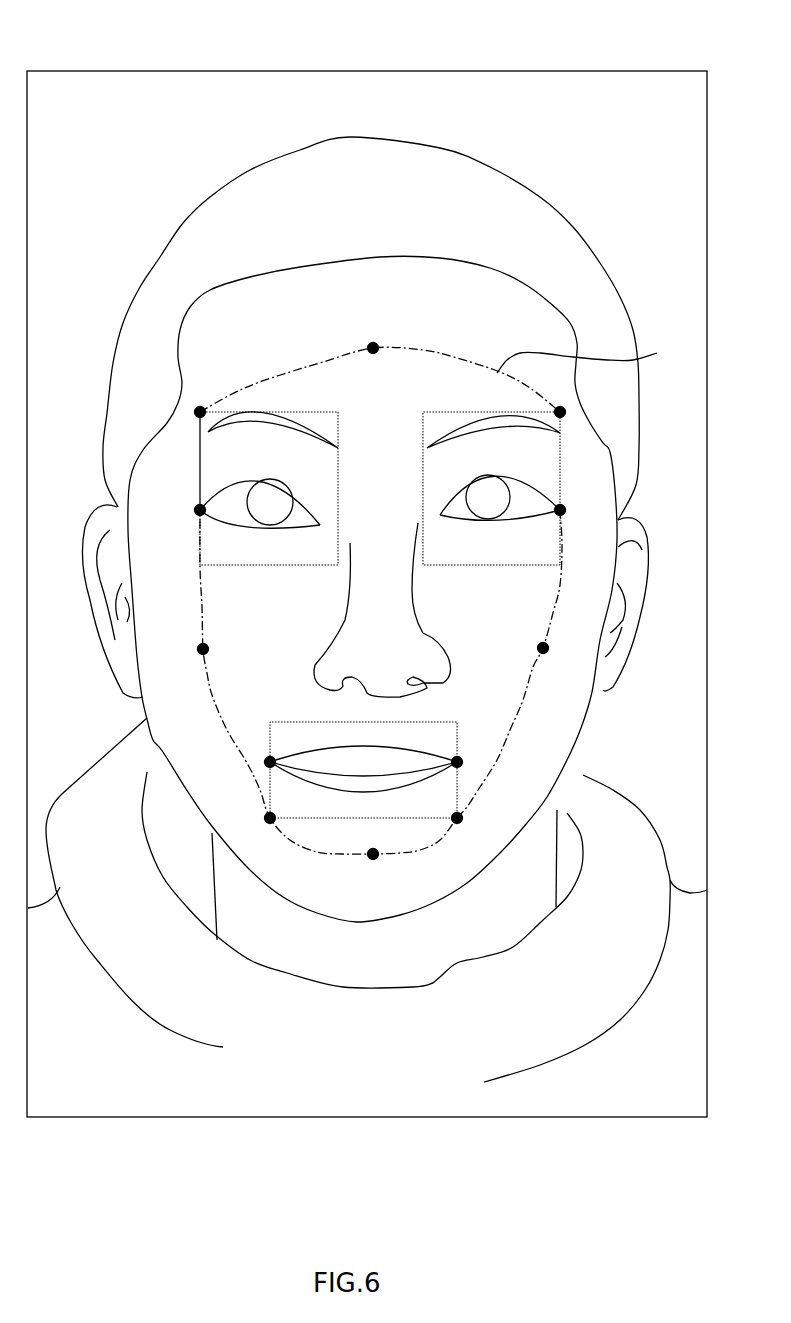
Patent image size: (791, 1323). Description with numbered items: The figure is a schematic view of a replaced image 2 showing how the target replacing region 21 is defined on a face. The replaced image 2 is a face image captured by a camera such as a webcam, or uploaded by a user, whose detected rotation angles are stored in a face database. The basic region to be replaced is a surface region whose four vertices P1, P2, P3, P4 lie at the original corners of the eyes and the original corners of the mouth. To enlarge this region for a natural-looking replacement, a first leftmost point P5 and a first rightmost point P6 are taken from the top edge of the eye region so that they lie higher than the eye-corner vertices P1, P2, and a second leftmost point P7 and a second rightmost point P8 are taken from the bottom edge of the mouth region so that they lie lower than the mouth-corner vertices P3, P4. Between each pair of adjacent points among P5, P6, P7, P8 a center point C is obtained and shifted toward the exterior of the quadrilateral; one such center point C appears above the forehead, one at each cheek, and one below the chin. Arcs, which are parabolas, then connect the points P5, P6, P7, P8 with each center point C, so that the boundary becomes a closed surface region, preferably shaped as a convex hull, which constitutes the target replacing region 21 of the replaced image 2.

The replaced image 2 is at (539, 71).
The target replacing region 21 is at (657, 353).
The vertex P1 is at (180, 511).
The vertex P2 is at (578, 518).
The vertex P3 is at (257, 748).
The vertex P4 is at (470, 748).
The first leftmost point P5 is at (201, 398).
The first rightmost point P6 is at (558, 398).
The second leftmost point P7 is at (261, 836).
The second rightmost point P8 is at (470, 834).
The center point C is at (373, 602).